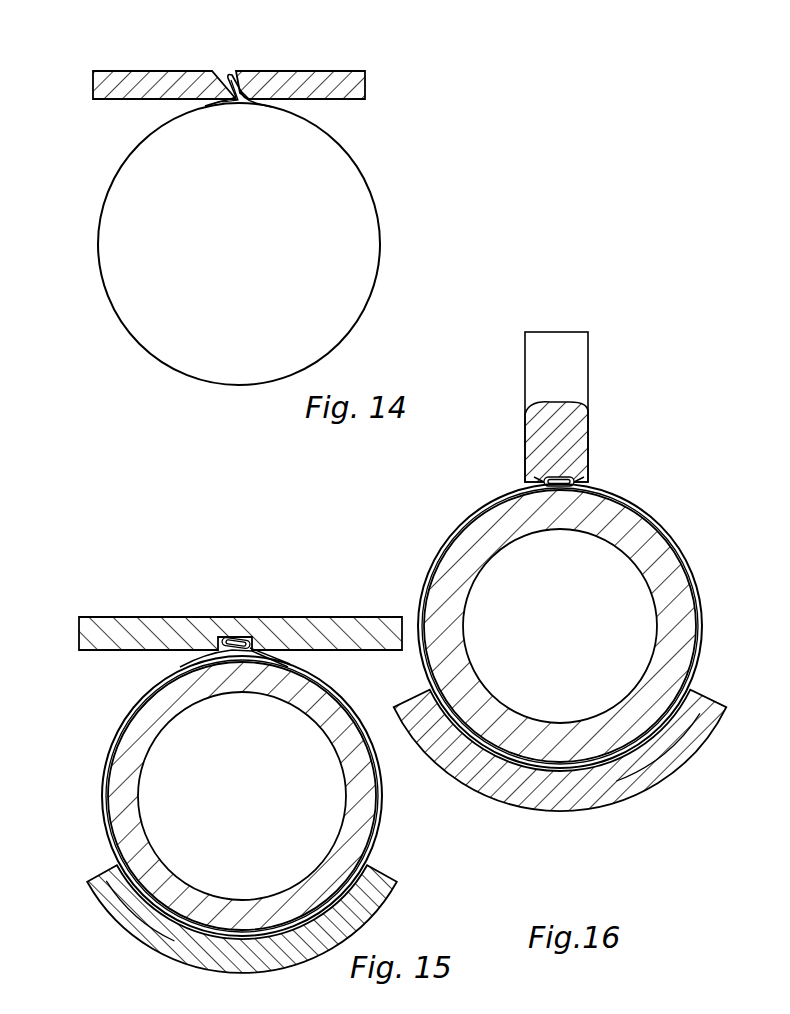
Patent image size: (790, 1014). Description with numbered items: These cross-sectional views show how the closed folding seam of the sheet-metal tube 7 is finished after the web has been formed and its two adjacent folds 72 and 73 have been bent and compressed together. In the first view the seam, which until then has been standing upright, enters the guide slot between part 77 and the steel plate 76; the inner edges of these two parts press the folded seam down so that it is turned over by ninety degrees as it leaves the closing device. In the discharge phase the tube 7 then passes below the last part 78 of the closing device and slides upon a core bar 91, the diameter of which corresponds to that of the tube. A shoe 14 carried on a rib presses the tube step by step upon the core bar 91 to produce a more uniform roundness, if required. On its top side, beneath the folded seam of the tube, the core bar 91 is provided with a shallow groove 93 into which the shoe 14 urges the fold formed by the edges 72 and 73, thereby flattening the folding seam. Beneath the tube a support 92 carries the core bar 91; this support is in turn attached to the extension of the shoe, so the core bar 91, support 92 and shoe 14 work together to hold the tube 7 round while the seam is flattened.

In FIG. 14, the tube 7 is at (380, 219).
In FIG. 15, the tube 7 is at (383, 784).
In FIG. 16, the tube 7 is at (432, 557).
In FIG. 16, the shoe 14 is at (547, 378).
In FIG. 15, the fold 72 is at (254, 645).
In FIG. 16, the fold 72 is at (583, 476).
In FIG. 15, the fold 73 is at (233, 637).
In FIG. 16, the fold 73 is at (556, 478).
In FIG. 14, the steel plate 76 is at (316, 86).
In FIG. 14, the part 77 is at (160, 88).
In FIG. 15, the last part of the closing device 78 is at (126, 633).
In FIG. 15, the core bar 91 is at (130, 750).
In FIG. 16, the core bar 91 is at (677, 600).
In FIG. 15, the support 92 is at (148, 927).
In FIG. 16, the support 92 is at (427, 718).
In FIG. 16, the shallow groove 93 is at (527, 500).